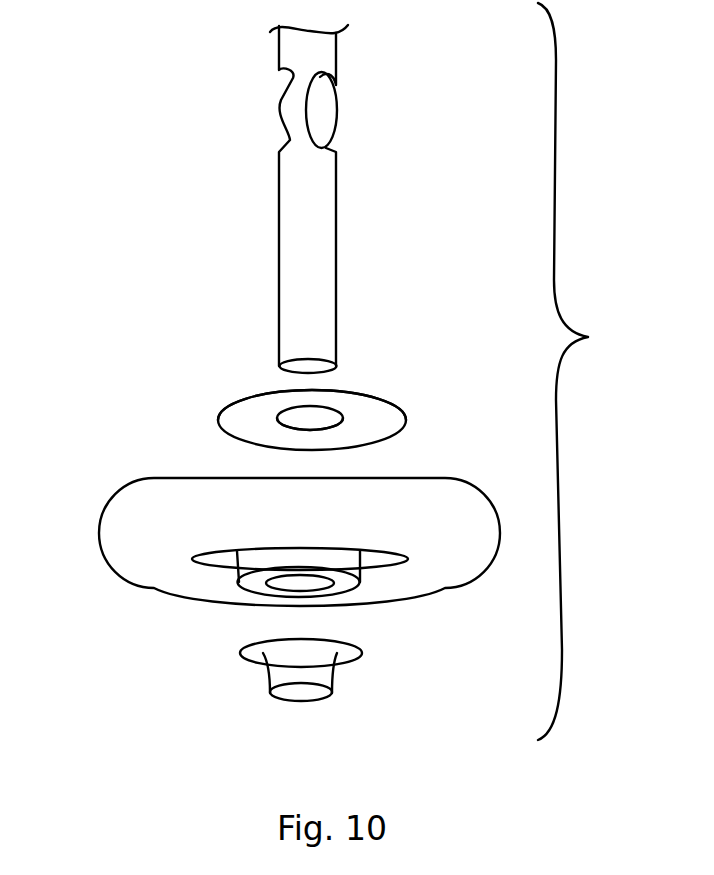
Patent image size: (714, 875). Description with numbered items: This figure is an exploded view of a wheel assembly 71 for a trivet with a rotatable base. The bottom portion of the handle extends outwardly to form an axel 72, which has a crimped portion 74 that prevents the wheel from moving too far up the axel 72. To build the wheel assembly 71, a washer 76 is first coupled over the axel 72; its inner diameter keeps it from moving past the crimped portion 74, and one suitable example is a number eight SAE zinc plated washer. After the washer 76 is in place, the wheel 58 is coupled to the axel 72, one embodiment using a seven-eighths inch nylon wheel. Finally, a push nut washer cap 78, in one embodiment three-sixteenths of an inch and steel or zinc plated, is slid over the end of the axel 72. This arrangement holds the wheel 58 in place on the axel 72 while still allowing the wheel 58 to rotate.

The wheel assembly 71 is at (585, 371).
The axel 72 is at (300, 53).
The crimped portion 74 is at (325, 122).
The washer 76 is at (250, 418).
The wheel 58 is at (113, 550).
The push nut washer cap 78 is at (287, 672).